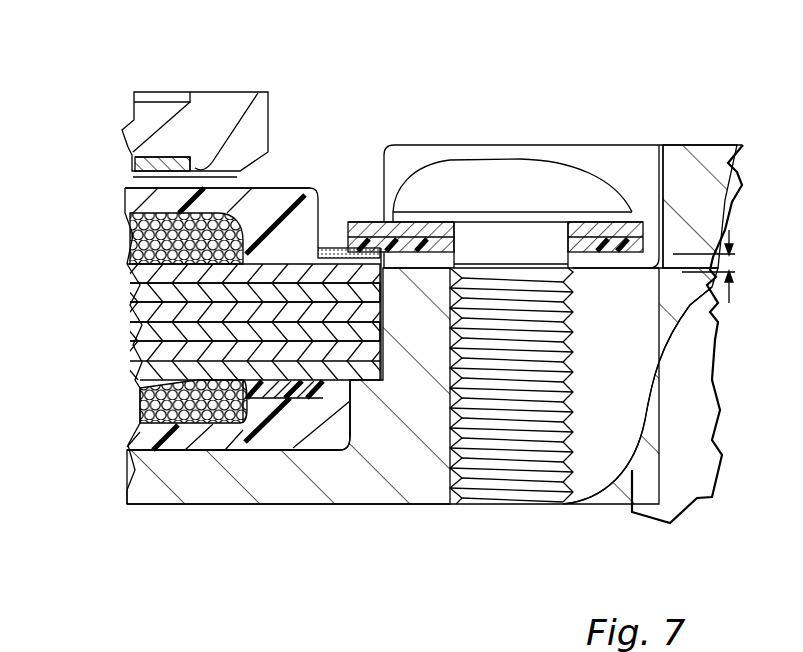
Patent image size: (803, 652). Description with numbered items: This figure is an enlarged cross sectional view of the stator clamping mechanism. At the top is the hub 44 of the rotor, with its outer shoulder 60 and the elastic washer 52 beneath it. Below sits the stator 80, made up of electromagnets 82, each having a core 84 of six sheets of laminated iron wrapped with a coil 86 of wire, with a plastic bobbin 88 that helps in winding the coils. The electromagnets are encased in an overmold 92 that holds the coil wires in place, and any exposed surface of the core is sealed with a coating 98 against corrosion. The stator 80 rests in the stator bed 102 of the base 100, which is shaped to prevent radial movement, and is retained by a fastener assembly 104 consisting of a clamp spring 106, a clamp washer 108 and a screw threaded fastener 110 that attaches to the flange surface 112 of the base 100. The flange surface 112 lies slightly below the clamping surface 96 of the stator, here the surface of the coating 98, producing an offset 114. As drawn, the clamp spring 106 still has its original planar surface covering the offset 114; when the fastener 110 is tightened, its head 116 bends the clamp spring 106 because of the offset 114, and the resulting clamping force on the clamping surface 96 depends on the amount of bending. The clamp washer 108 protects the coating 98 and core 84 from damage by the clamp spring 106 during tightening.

The hub 44 is at (213, 100).
The elastic washer 52 is at (162, 163).
The outer shoulder 60 is at (267, 101).
The stator 80 is at (107, 270).
The electromagnets 82 is at (128, 292).
The core 84 is at (143, 337).
The coil 86 is at (132, 225).
The plastic bobbin 88 is at (264, 382).
The overmold 92 is at (221, 200).
The clamping surface 96 is at (385, 146).
The coating 98 is at (321, 247).
The base 100 is at (413, 467).
The stator bed 102 is at (352, 420).
The fastener assembly 104 is at (528, 294).
The clamp spring 106 is at (390, 220).
The clamp washer 108 is at (418, 248).
The fastener 110 is at (486, 507).
The flange surface 112 is at (610, 270).
The offset 114 is at (686, 300).
The head 116 is at (517, 180).